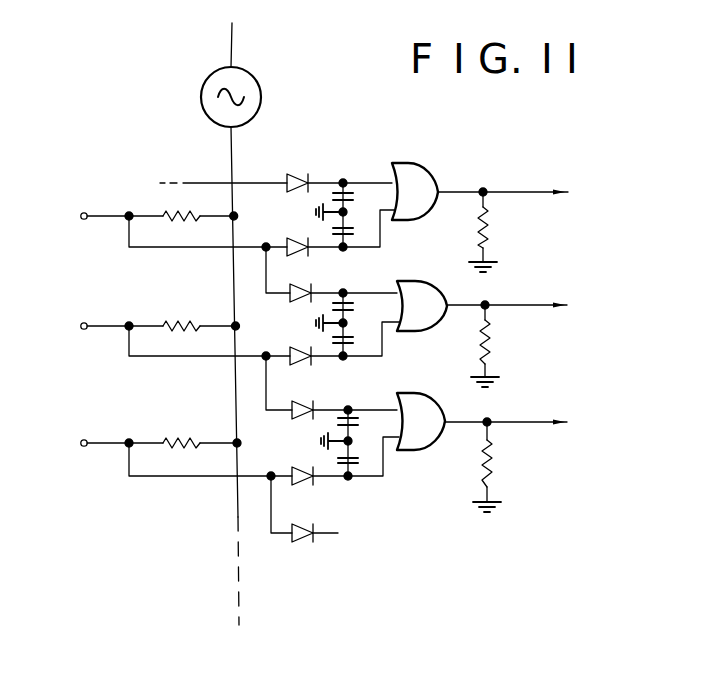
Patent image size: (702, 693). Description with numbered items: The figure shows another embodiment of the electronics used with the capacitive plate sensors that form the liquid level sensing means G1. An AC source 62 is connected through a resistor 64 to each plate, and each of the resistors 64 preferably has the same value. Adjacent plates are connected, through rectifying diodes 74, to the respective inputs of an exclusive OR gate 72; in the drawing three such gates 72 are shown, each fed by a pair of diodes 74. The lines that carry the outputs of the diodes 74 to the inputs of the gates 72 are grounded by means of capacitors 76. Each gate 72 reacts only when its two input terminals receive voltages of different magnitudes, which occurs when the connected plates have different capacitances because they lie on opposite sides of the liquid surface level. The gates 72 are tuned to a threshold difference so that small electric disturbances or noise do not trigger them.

The AC source 62 is at (203, 86).
The resistor 64 is at (185, 221).
The exclusive OR gate 72 is at (410, 221).
The rectifying diode 74 is at (283, 238).
The capacitor 76 is at (356, 203).
The liquid level sensing means G1 is at (540, 180).